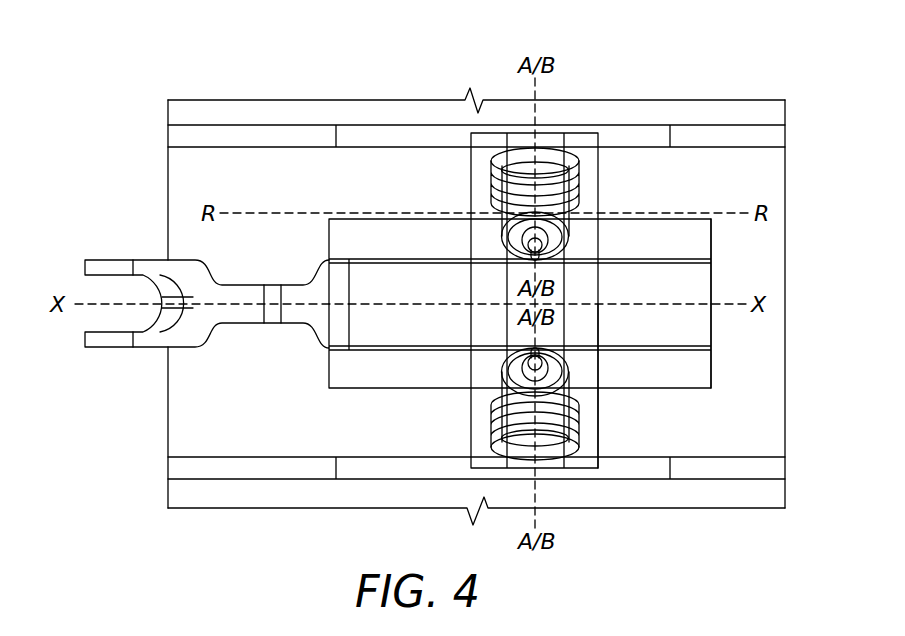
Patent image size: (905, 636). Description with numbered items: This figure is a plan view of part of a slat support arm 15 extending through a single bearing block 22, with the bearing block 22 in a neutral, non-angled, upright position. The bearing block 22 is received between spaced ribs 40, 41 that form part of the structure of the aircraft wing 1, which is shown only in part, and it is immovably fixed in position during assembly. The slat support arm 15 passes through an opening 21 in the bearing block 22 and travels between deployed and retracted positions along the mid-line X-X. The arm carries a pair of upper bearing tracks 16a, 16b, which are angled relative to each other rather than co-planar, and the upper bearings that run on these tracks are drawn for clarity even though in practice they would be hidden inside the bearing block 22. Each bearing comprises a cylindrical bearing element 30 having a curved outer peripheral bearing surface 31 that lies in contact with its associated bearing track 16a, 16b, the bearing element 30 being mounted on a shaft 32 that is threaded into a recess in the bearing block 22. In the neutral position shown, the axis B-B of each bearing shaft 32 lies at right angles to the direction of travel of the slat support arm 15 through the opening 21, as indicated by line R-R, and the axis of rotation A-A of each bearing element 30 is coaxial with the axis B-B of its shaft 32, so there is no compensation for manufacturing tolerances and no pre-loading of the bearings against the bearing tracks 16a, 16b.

The aircraft wing 1 is at (733, 106).
The rib 40 is at (202, 147).
The rib 41 is at (198, 468).
The upper bearing track 16a is at (337, 372).
The upper bearing track 16b is at (337, 242).
The bearing block 22 is at (470, 166).
The opening 21 is at (600, 433).
The cylindrical bearing element 30 is at (497, 206).
The curved outer peripheral bearing surface 31 is at (577, 205).
The shaft 32 is at (536, 259).
The slat support arm 15 is at (698, 404).